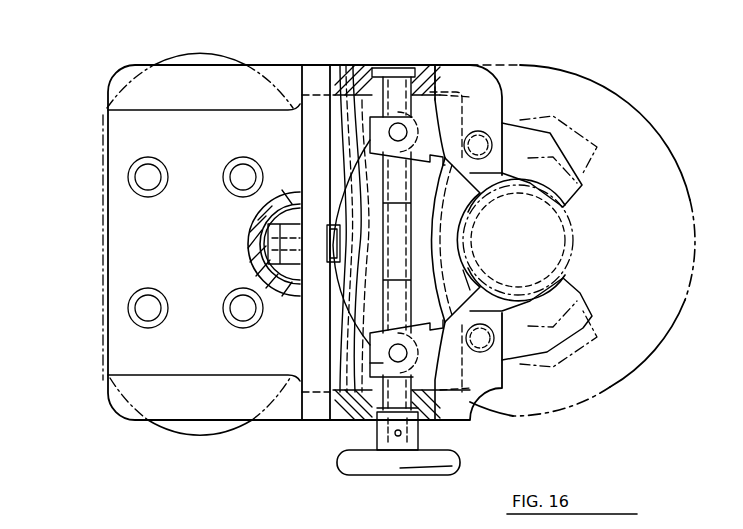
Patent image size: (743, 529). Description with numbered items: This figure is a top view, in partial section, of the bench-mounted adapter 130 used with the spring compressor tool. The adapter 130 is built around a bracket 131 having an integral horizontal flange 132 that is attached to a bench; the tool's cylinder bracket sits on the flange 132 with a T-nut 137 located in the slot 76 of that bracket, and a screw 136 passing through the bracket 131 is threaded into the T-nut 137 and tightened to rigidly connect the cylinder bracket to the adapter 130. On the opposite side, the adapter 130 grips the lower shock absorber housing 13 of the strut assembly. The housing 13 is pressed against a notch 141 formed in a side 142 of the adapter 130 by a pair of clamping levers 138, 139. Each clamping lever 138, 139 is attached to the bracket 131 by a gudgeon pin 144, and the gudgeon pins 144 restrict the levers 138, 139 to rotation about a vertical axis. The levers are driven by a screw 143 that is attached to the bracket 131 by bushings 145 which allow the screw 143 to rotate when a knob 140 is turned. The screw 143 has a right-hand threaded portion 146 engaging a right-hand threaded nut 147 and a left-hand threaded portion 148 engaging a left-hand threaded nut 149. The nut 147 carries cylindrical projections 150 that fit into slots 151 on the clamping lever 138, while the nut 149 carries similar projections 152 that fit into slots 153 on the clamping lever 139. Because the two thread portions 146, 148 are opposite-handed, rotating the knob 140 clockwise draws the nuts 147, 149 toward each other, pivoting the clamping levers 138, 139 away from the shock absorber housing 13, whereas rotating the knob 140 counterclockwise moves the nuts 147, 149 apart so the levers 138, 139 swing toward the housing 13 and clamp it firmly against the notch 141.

The lower shock absorber housing 13 is at (575, 258).
The slot 76 is at (333, 245).
The bench-mounted adapter 130 is at (301, 430).
The bracket 131 is at (108, 102).
The horizontal flange 132 is at (128, 420).
The screw 136 is at (297, 290).
The T-nut 137 is at (258, 230).
The clamping lever 138 is at (580, 196).
The clamping lever 139 is at (584, 290).
The knob 140 is at (338, 470).
The notch 141 is at (460, 232).
The side 142 is at (503, 92).
The screw 143 is at (411, 255).
The gudgeon pin 144 is at (483, 138).
The bushing 145 is at (385, 128).
The right-hand threaded portion 146 is at (466, 208).
The right-hand threaded nut 147 is at (385, 130).
The left-hand threaded portion 148 is at (470, 284).
The left-hand threaded nut 149 is at (388, 363).
The cylindrical projections 150 is at (380, 140).
The slots 151 is at (350, 100).
The projections 152 is at (392, 354).
The slots 153 is at (385, 345).